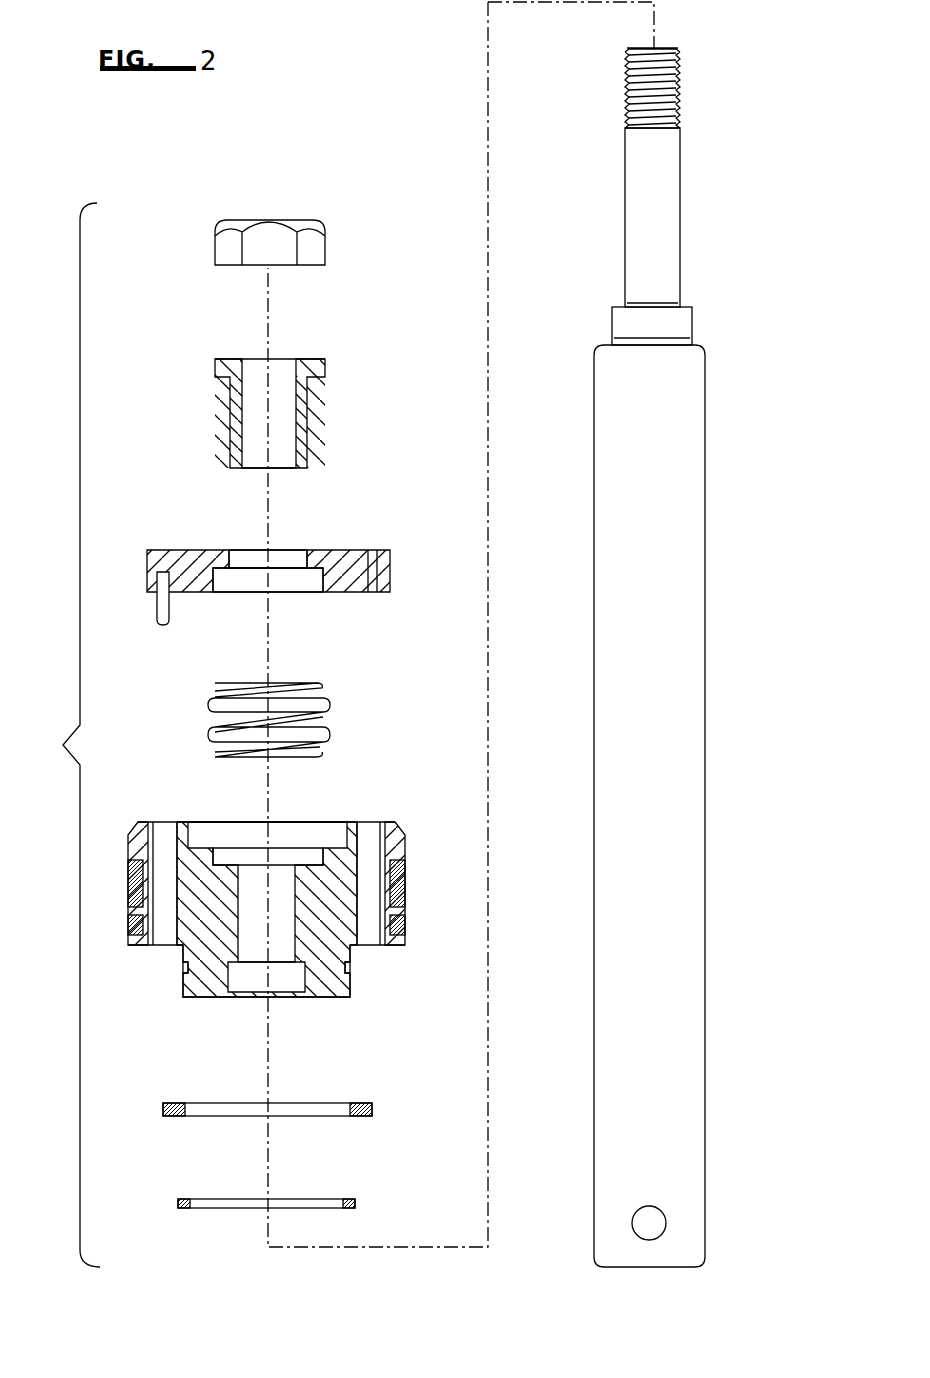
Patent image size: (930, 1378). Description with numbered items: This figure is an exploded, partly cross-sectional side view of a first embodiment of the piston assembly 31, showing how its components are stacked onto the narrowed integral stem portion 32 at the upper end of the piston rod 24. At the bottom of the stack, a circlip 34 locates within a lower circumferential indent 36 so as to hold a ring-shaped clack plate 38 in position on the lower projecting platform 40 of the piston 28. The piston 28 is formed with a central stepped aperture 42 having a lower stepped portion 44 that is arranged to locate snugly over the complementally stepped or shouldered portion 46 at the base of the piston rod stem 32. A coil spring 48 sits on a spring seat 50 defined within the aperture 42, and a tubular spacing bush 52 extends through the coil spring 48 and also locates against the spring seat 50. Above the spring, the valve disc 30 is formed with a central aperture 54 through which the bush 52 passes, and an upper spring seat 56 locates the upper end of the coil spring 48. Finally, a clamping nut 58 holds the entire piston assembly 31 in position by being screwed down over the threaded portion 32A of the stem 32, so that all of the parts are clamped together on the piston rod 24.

The piston rod 24 is at (700, 758).
The piston 28 is at (287, 883).
The valve disc 30 is at (268, 550).
The piston assembly 31 is at (61, 735).
The stem portion 32 is at (624, 237).
The threaded portion 32A is at (683, 108).
The circlip 34 is at (355, 1203).
The lower circumferential indent 36 is at (350, 965).
The clack plate 38 is at (372, 1109).
The lower projecting platform 40 is at (338, 992).
The central stepped aperture 42 is at (245, 820).
The lower stepped portion 44 is at (240, 971).
The shouldered portion 46 is at (705, 326).
The coil spring 48 is at (325, 735).
The spring seat 50 is at (223, 857).
The tubular spacing bush 52 is at (308, 432).
The central aperture 54 is at (243, 546).
The upper spring seat 56 is at (313, 570).
The clamping nut 58 is at (325, 243).